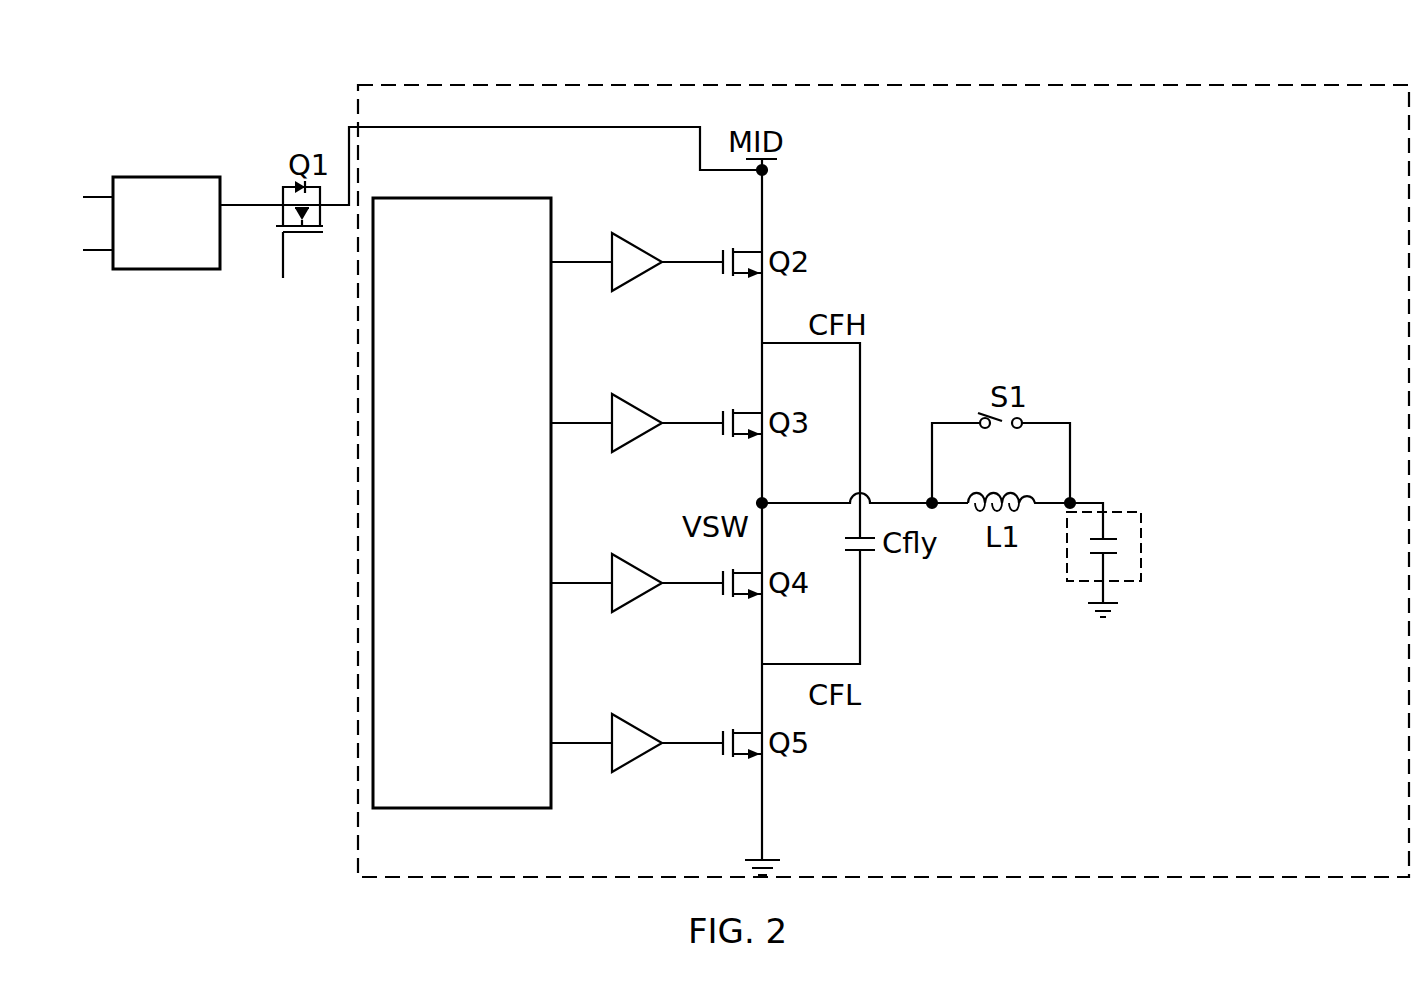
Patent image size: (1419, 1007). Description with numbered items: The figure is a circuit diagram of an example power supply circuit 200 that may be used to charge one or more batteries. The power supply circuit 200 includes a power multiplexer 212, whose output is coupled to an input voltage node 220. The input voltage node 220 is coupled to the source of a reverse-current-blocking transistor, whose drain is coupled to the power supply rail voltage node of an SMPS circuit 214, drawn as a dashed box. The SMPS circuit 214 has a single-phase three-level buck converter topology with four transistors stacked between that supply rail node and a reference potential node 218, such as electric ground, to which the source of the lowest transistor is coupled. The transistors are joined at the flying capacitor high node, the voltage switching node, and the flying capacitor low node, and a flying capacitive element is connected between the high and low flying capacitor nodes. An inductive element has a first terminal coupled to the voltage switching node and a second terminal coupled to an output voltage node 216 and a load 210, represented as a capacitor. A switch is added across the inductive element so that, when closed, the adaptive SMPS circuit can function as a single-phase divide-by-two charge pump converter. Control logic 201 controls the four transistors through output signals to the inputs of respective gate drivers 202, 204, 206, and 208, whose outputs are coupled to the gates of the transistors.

The power supply circuit 200 is at (136, 56).
The control logic 201 is at (496, 198).
The gate driver 202 is at (637, 280).
The gate driver 204 is at (637, 441).
The gate driver 206 is at (637, 601).
The gate driver 208 is at (637, 761).
The load 210 is at (1066, 560).
The power multiplexer 212 is at (165, 177).
The SMPS circuit 214 is at (527, 86).
The output voltage node 216 is at (1105, 504).
The reference potential node 218 is at (1103, 621).
The input voltage node 220 is at (265, 207).